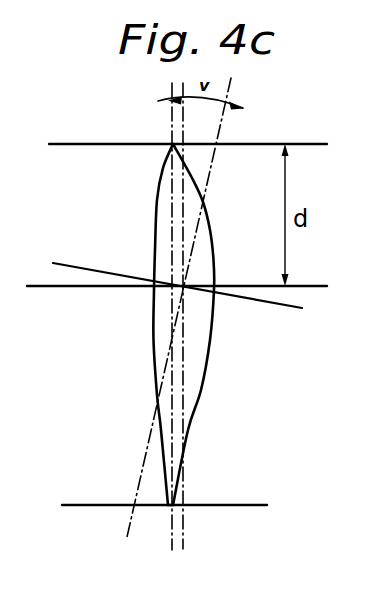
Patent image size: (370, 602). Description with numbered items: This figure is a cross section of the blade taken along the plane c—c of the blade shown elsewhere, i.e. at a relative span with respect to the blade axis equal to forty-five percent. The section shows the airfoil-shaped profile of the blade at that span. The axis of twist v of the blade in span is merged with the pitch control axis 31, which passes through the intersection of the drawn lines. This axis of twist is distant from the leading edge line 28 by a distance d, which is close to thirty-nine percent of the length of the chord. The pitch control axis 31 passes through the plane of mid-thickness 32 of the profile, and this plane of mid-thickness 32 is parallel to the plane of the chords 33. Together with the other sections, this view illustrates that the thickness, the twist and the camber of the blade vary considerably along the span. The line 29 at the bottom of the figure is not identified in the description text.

The leading edge line 28 is at (122, 142).
The lower reference plane 29 is at (88, 507).
The pitch control axis 31 is at (184, 288).
The plane of mid-thickness 32 is at (183, 227).
The plane of the chords 33 is at (171, 298).